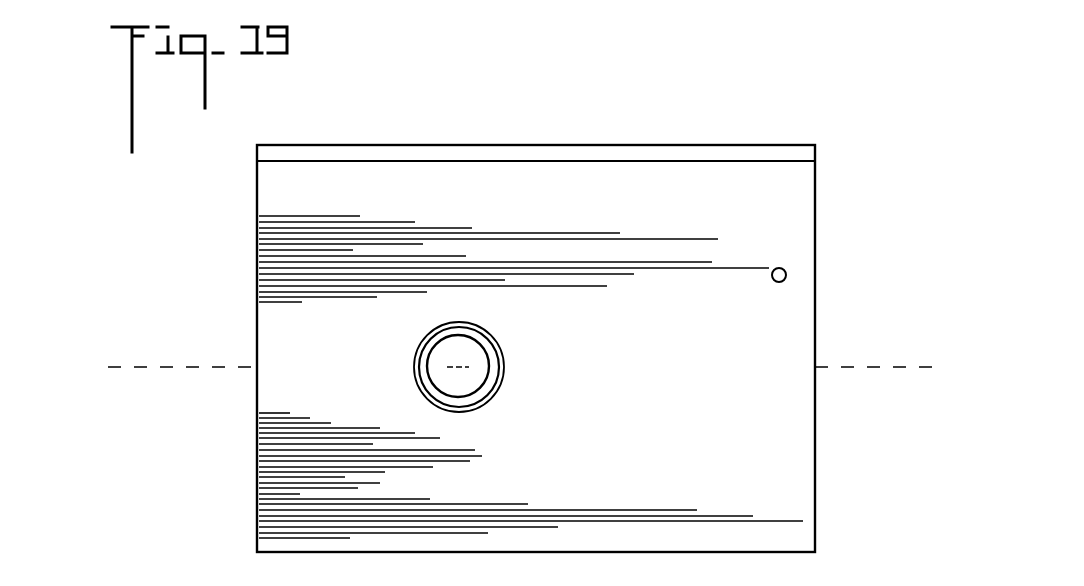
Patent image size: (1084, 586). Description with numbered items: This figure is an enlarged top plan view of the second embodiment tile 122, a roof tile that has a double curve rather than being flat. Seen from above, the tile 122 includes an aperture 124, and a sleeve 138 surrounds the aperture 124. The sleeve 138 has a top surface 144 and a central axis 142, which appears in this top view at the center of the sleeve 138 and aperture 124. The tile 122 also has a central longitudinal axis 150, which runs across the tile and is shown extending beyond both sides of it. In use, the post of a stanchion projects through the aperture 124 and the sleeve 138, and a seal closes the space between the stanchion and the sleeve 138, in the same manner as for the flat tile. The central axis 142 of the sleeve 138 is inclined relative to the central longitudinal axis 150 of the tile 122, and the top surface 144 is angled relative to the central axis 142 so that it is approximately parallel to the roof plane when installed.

The second embodiment tile 122 is at (718, 99).
The aperture 124 is at (465, 355).
The sleeve 138 is at (494, 399).
The central axis 142 is at (456, 371).
The top surface 144 is at (432, 344).
The central longitudinal axis 150 is at (163, 366).